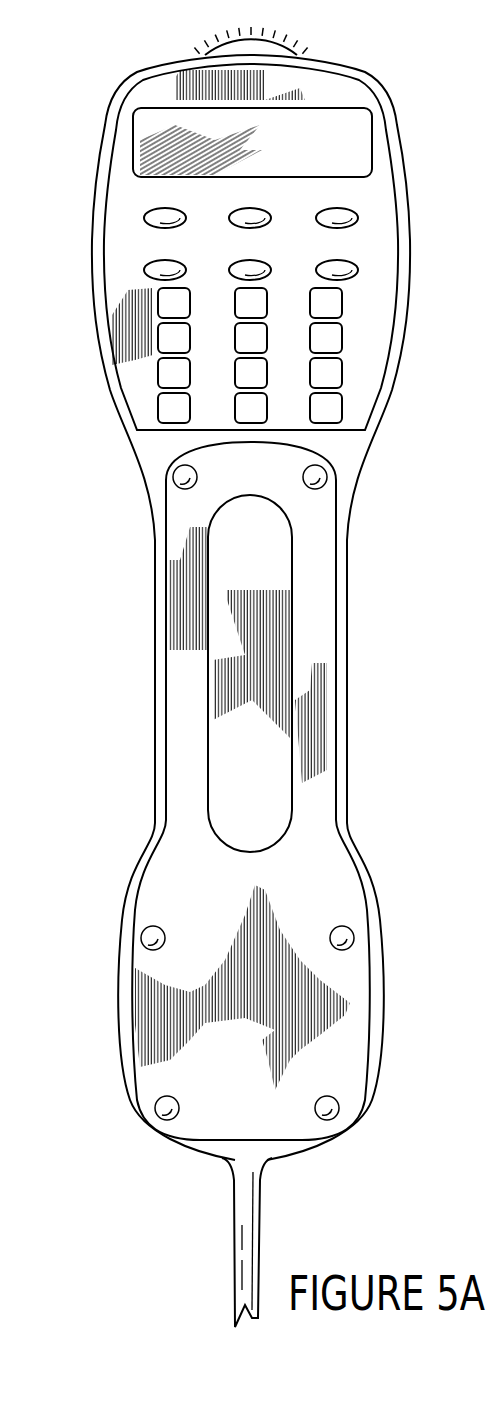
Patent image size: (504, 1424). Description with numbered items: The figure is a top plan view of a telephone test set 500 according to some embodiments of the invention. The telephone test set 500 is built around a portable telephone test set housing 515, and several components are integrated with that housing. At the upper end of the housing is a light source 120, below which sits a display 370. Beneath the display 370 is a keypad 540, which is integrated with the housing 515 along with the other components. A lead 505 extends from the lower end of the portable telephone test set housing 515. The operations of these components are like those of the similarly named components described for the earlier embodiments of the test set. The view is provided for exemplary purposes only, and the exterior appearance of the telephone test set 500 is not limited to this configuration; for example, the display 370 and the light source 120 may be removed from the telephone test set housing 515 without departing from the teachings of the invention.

The telephone test set 500 is at (108, 46).
The light source 120 is at (290, 45).
The display 370 is at (370, 140).
The keypad 540 is at (343, 330).
The portable telephone test set housing 515 is at (347, 622).
The lead 505 is at (260, 1225).